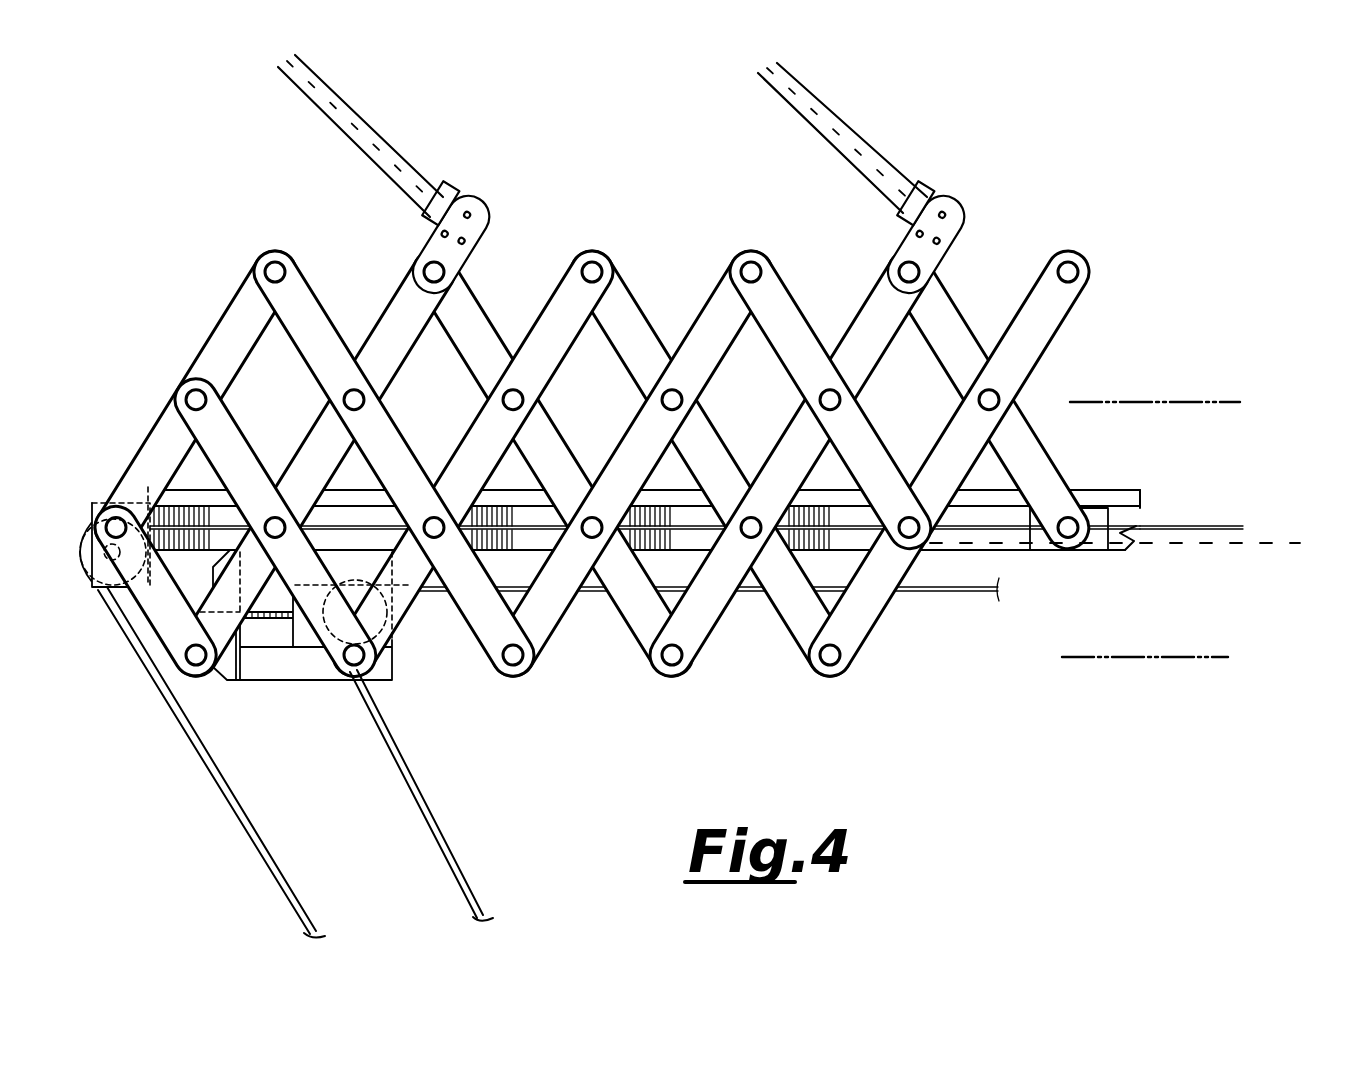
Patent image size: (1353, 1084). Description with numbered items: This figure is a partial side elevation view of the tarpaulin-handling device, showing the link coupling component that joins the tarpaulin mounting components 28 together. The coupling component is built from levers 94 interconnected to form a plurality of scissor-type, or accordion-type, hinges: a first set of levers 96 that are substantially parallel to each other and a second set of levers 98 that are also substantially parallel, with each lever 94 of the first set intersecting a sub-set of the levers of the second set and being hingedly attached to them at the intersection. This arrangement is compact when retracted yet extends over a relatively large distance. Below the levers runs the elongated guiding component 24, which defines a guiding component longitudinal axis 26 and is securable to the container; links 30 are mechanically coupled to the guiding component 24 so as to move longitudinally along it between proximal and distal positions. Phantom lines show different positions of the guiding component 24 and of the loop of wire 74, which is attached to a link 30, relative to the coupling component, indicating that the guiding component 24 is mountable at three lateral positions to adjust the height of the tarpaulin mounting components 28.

The guiding component 24 is at (1143, 481).
The guiding component longitudinal axis 26 is at (1236, 543).
The tarpaulin mounting components 28 is at (413, 170).
The links 30 is at (570, 477).
The loop of wire 74 is at (240, 773).
The levers 94 is at (230, 320).
The first set of levers 96 is at (863, 318).
The second set of levers 98 is at (793, 607).